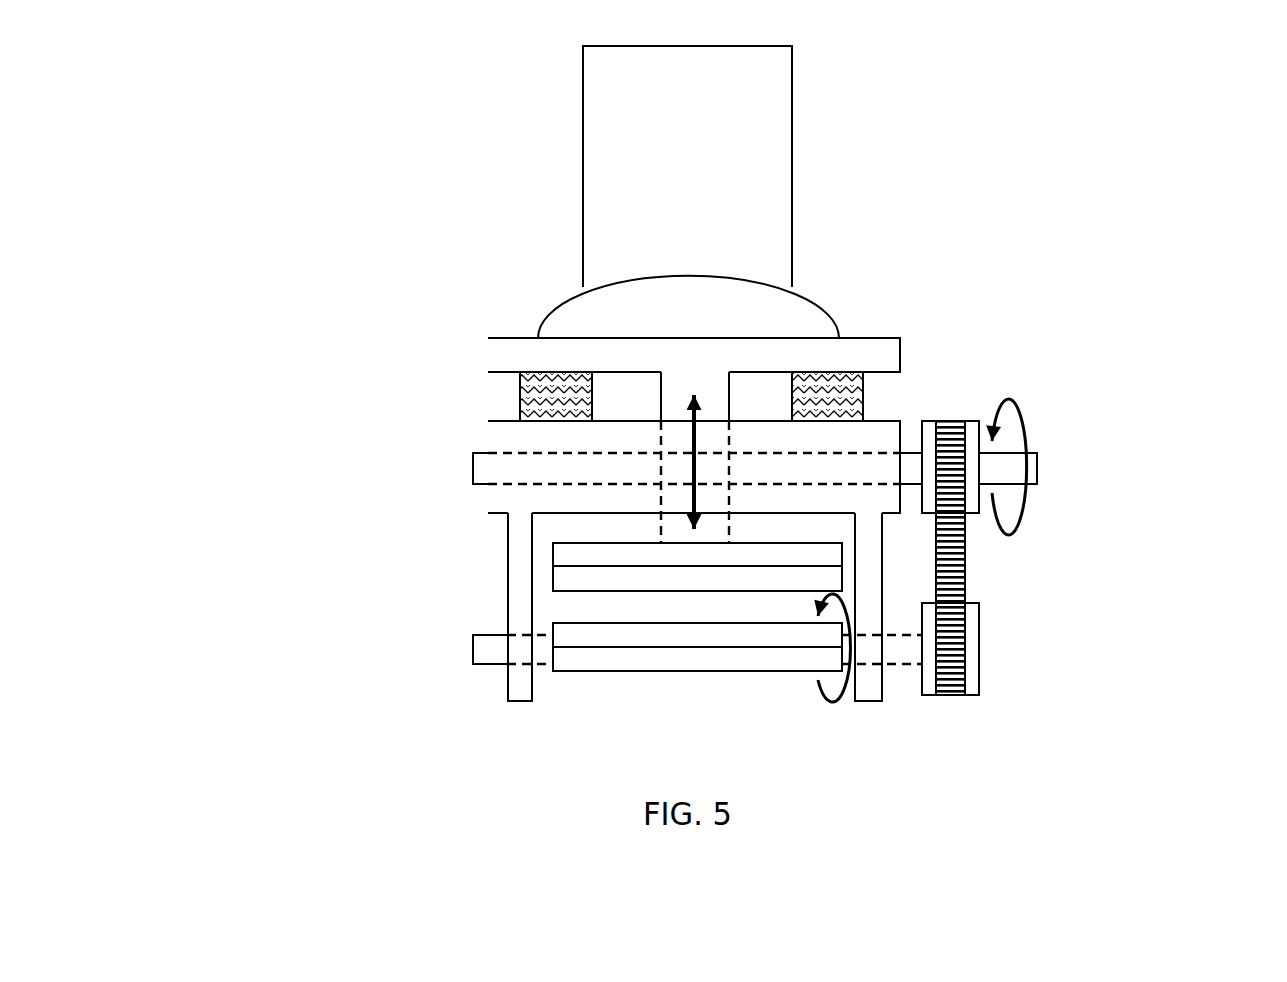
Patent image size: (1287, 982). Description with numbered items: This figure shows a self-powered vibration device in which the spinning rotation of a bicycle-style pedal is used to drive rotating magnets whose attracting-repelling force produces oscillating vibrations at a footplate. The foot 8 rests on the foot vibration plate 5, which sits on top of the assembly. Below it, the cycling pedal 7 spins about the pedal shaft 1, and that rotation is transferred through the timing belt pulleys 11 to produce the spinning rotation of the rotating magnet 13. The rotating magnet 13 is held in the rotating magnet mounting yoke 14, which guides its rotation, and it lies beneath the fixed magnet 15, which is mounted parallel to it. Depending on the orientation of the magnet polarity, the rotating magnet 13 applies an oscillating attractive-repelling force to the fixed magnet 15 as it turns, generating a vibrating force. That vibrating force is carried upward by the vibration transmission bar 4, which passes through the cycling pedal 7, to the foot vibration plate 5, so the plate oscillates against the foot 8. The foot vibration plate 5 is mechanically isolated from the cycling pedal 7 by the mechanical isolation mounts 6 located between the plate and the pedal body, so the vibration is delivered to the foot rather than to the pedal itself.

The pedal shaft 1 is at (1118, 373).
The vibration transmission bar 4 is at (733, 405).
The foot vibration plate 5 is at (487, 328).
The mechanical isolation mounts 6 is at (520, 398).
The cycling pedal 7 is at (488, 435).
The foot 8 is at (688, 192).
The timing belt pulleys 11 is at (984, 526).
The rotating magnet 13 is at (664, 674).
The rotating magnet mounting yoke 14 is at (507, 690).
The fixed magnet 15 is at (553, 569).